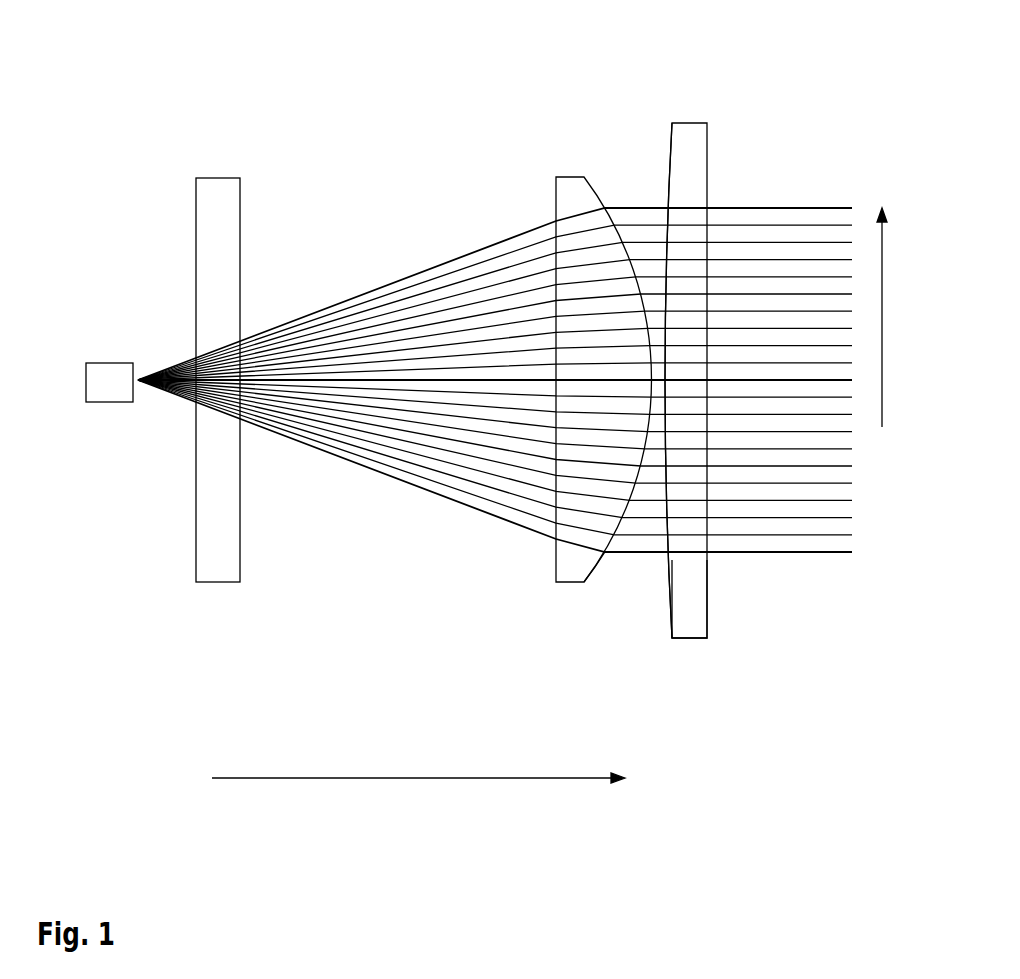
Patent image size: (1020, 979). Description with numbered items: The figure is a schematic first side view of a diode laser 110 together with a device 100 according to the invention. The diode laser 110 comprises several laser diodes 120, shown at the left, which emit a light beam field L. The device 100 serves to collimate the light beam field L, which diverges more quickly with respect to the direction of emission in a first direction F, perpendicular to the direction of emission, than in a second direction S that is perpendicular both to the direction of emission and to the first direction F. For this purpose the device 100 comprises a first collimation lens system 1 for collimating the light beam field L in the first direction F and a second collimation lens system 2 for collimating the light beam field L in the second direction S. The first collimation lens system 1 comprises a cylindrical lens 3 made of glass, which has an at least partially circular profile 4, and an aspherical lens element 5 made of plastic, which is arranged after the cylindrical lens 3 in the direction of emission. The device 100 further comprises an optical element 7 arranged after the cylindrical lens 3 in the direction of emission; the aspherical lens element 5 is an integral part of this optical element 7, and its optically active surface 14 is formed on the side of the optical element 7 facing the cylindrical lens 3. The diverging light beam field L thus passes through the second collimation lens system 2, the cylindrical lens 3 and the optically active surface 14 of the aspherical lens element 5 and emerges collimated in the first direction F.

The diode laser 110 is at (172, 112).
The device 100 is at (254, 104).
The laser diodes 120 is at (117, 385).
The light beam field L is at (377, 441).
The second collimation lens system 2 is at (220, 258).
The first collimation lens system 1 is at (537, 140).
The cylindrical lens 3 is at (520, 222).
The at least partially circular profile 4 is at (605, 576).
The aspherical lens element 5 is at (697, 173).
The optically active surface 14 is at (663, 172).
The further optical element 7 is at (703, 608).
The first direction F is at (882, 318).
The second direction S is at (375, 778).